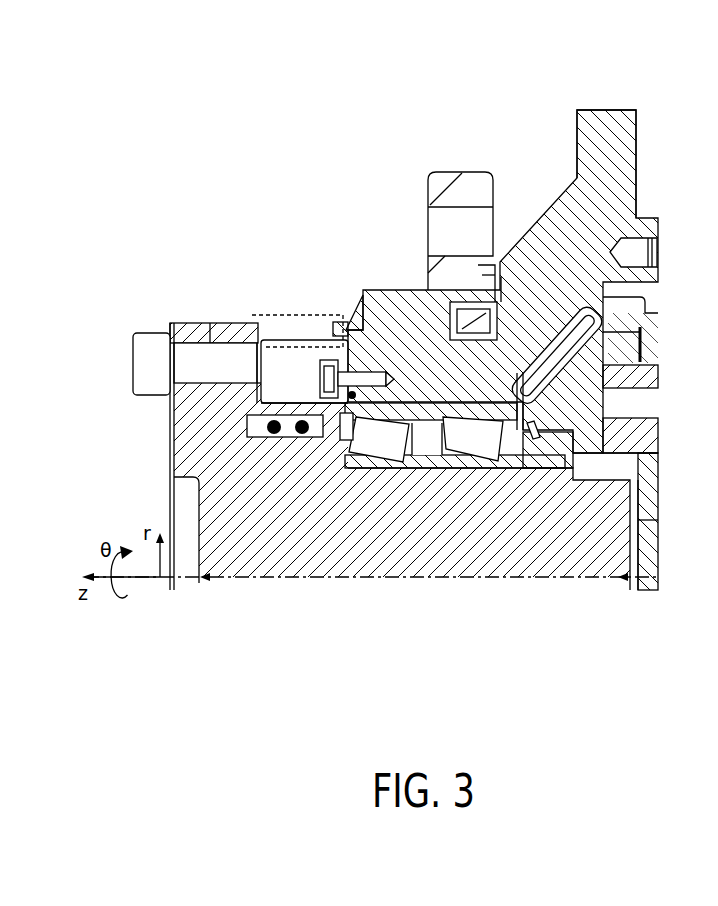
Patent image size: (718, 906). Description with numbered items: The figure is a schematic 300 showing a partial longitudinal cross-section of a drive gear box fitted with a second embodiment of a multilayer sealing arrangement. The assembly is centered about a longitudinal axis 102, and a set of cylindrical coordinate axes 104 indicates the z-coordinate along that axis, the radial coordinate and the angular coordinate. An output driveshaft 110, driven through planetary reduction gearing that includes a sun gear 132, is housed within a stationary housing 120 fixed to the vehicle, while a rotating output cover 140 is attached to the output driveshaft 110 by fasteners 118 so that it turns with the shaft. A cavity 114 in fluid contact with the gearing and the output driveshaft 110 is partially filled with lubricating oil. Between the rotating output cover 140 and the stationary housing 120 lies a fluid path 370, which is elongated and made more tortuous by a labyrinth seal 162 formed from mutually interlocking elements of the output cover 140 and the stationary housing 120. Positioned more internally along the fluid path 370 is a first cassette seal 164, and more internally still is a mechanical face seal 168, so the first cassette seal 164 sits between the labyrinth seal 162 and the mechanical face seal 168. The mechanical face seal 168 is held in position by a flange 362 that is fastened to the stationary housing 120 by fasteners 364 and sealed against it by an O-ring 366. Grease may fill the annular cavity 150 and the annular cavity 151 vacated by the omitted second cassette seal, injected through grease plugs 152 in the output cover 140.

The schematic 300 is at (123, 44).
The longitudinal axis 102 is at (395, 577).
The set of cylindrical coordinate axes 104 is at (111, 515).
The output driveshaft 110 is at (451, 537).
The cavity 114 is at (583, 382).
The fasteners 118 is at (148, 380).
The stationary housing 120 is at (583, 142).
The sun gear 132 is at (647, 377).
The output cover 140 is at (433, 291).
The annular cavity 150 is at (337, 345).
The annular cavity 151 is at (300, 363).
The grease plugs 152 is at (344, 318).
The labyrinth seal 162 is at (479, 272).
The first cassette seal 164 is at (477, 320).
The mechanical face seal 168 is at (263, 437).
The flange 362 is at (318, 368).
The fasteners 364 is at (318, 394).
The O-ring 366 is at (352, 397).
The fluid path 370 is at (347, 345).